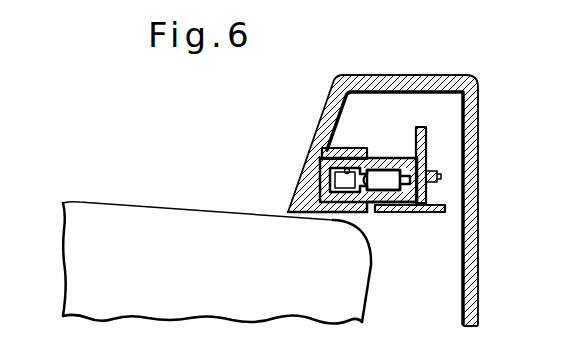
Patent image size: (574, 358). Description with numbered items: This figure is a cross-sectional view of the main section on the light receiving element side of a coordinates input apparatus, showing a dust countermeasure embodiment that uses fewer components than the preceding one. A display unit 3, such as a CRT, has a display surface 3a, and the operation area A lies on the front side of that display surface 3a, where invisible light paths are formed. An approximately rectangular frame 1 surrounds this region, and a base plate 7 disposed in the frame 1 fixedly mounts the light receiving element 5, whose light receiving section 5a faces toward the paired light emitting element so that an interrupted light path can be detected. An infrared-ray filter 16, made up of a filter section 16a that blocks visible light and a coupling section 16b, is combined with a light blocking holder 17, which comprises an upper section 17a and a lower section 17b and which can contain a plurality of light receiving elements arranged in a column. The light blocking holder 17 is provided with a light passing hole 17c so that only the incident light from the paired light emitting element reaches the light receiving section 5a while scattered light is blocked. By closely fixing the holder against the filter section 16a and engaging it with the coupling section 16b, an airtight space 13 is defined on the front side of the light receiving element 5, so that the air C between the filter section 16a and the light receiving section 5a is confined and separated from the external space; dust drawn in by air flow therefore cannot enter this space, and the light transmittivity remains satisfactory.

The frame 1 is at (469, 100).
The display unit 3 is at (64, 263).
The display surface 3a is at (98, 203).
The light receiving element 5 is at (390, 174).
The light receiving section 5a is at (380, 153).
The base plate 7 is at (427, 131).
The airtight space 13 is at (342, 150).
The infrared-ray filter 16 is at (318, 178).
The filter section 16a is at (320, 190).
The coupling section 16b is at (322, 152).
The light blocking holder 17 is at (474, 182).
The upper section 17a is at (437, 160).
The lower section 17b is at (437, 196).
The light passing hole 17c is at (322, 179).
The operation area A is at (138, 177).
The air C is at (300, 190).